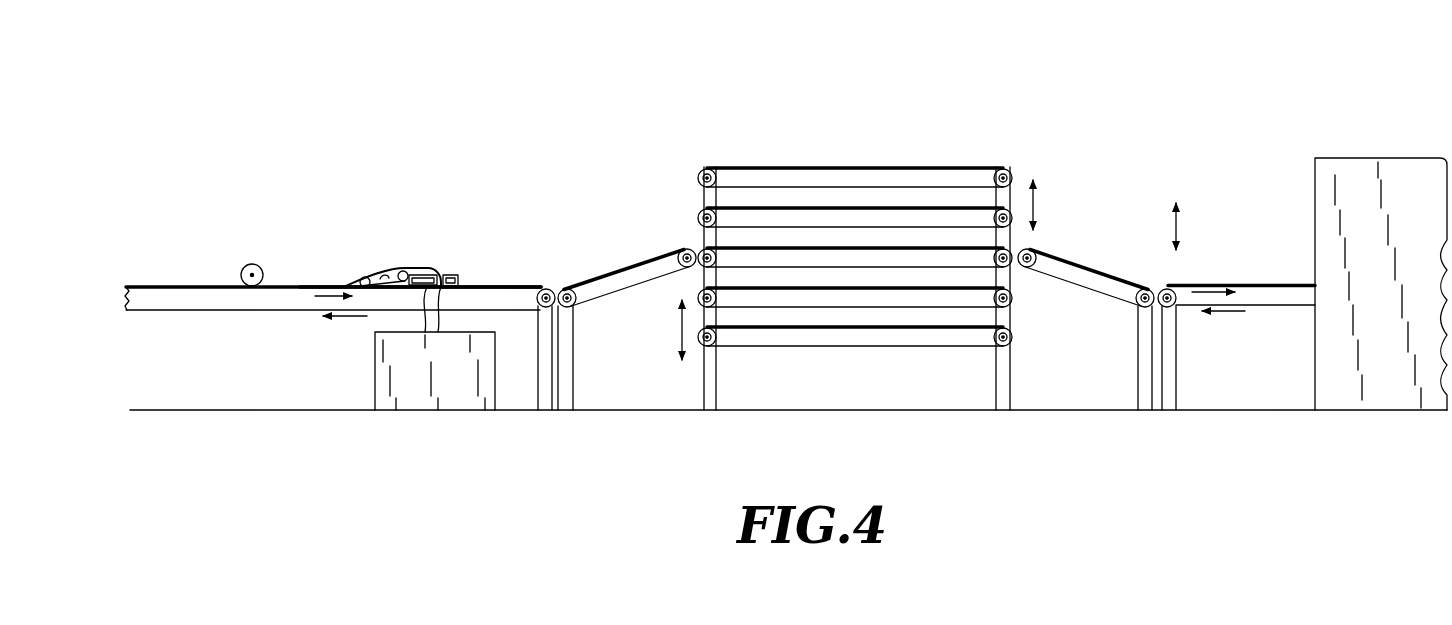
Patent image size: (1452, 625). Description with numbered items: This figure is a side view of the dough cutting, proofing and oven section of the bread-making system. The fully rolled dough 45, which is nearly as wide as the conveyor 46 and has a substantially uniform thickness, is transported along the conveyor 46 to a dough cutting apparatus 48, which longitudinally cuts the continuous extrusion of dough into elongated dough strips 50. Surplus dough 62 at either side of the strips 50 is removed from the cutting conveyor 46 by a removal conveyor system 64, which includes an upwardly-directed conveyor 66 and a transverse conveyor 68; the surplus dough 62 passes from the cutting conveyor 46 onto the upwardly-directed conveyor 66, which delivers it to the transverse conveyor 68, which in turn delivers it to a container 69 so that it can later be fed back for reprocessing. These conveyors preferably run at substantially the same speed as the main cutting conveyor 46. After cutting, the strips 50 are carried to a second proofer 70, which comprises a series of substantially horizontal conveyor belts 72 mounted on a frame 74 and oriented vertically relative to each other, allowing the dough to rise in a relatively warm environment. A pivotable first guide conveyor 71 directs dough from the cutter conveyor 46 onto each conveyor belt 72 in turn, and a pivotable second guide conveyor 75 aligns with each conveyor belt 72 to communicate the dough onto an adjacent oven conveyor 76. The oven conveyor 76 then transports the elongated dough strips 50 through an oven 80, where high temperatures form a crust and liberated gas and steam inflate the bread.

The fully rolled dough 45 is at (172, 286).
The conveyor 46 is at (255, 287).
The dough cutting apparatus 48 is at (246, 258).
The elongated dough strips 50 is at (275, 286).
The surplus dough 62 is at (432, 274).
The removal conveyor system 64 is at (414, 256).
The upwardly-directed conveyor 66 is at (378, 273).
The transverse conveyor 68 is at (455, 276).
The container 69 is at (378, 388).
The second proofer 70 is at (821, 246).
The first guide conveyor 71 is at (597, 280).
The conveyor belts 72 is at (700, 212).
The frame 74 is at (716, 378).
The second guide conveyor 75 is at (1100, 268).
The oven conveyor 76 is at (1283, 286).
The oven 80 is at (1340, 158).